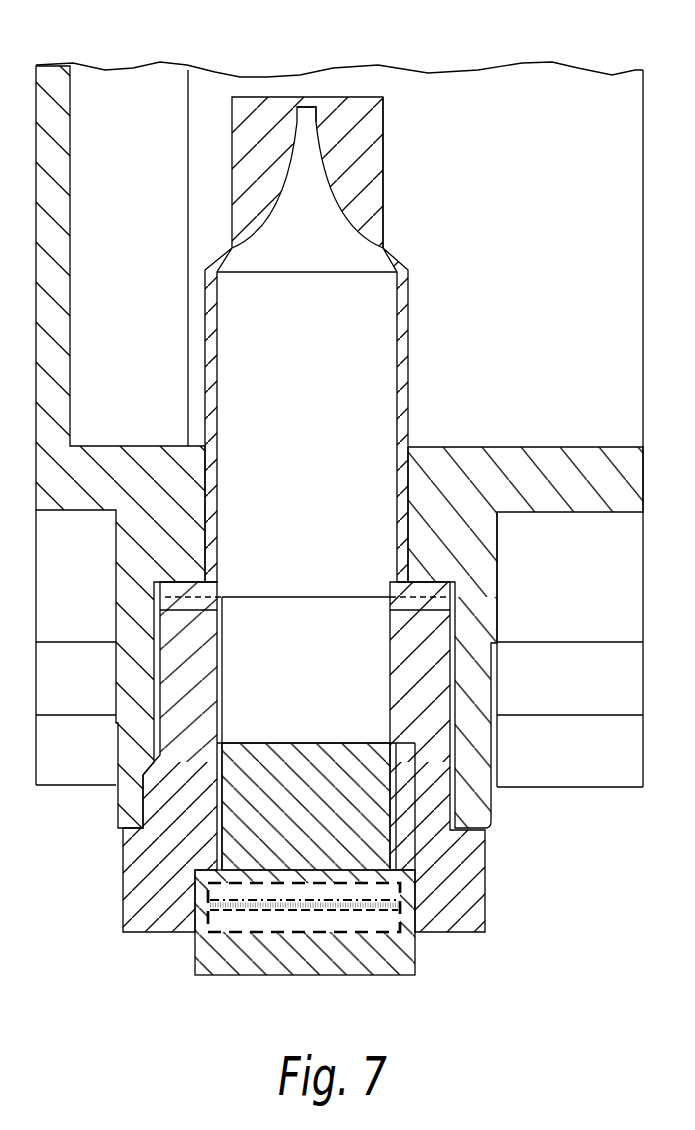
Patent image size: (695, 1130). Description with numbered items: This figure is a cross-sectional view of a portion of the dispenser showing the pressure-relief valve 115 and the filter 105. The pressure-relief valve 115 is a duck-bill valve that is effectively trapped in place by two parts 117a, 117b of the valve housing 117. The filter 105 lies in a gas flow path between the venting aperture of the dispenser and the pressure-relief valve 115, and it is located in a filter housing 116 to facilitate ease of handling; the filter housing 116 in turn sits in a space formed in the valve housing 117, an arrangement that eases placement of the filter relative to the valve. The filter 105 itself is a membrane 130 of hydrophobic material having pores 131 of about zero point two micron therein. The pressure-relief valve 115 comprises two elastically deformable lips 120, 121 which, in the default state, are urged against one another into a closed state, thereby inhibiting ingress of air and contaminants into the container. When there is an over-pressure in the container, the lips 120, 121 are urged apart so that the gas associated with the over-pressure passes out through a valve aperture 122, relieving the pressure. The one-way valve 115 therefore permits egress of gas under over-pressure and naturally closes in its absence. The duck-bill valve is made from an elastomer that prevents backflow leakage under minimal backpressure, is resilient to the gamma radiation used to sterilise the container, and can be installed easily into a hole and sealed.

The filter 105 is at (337, 922).
The pressure-relief valve 115 is at (405, 369).
The filter housing 116 is at (267, 937).
The valve housing 117 is at (450, 920).
The first part of the valve housing 117a is at (435, 785).
The second part of the valve housing 117b is at (430, 575).
The elastically deformable lip 120 is at (257, 123).
The elastically deformable lip 121 is at (365, 145).
The valve aperture 122 is at (304, 105).
The membrane 130 is at (240, 915).
The pores 131 is at (236, 906).